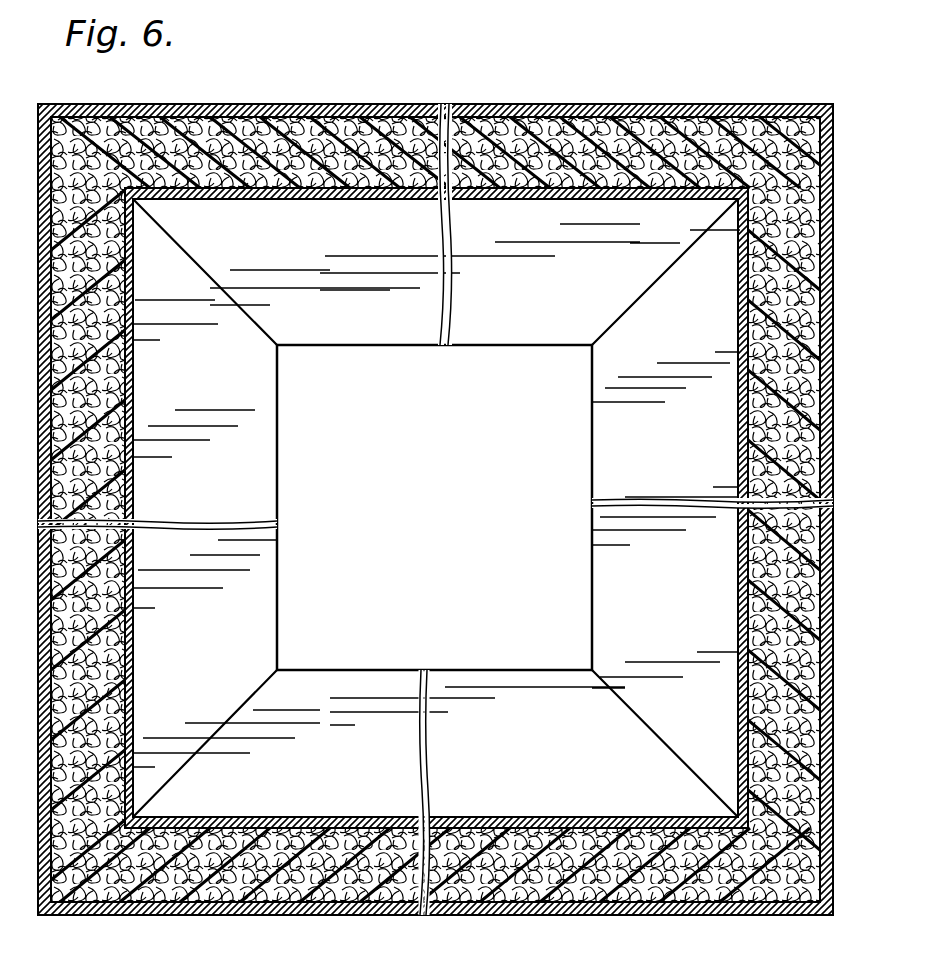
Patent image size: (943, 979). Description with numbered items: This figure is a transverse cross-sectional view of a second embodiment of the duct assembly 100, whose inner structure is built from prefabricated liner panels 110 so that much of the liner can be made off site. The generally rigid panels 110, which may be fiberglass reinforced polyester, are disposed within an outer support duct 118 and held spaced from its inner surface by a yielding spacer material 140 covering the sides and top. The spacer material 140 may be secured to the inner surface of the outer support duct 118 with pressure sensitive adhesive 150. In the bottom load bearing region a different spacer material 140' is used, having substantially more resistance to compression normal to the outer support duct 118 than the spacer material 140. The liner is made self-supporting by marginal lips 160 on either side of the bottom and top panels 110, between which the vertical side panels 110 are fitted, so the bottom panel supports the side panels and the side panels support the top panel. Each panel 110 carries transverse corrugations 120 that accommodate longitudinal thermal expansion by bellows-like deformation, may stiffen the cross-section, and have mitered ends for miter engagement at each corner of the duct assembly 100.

The duct assembly 100 is at (435, 480).
The outer support duct 118 is at (188, 104).
The pressure sensitive adhesive 150 is at (305, 112).
The marginal lips 160 is at (758, 786).
The panels 110 is at (171, 213).
The spacer material 140 is at (439, 508).
The spacer material 140' is at (435, 800).
The corrugations 120 is at (332, 348).